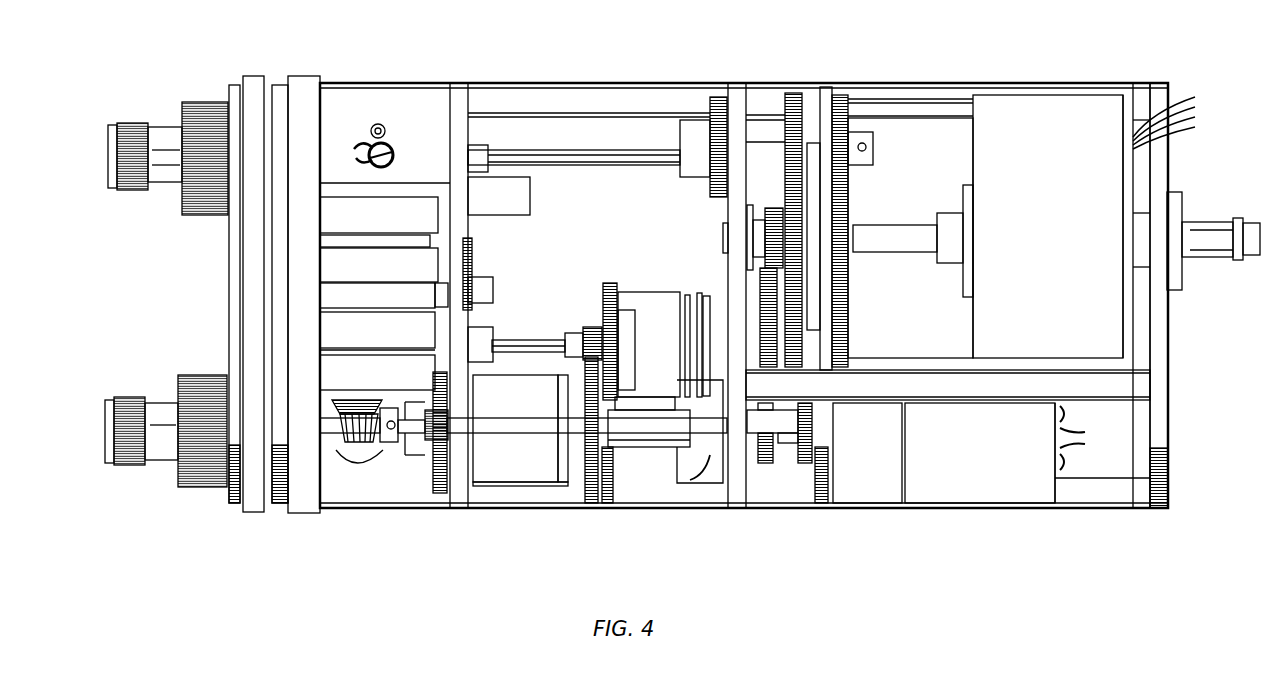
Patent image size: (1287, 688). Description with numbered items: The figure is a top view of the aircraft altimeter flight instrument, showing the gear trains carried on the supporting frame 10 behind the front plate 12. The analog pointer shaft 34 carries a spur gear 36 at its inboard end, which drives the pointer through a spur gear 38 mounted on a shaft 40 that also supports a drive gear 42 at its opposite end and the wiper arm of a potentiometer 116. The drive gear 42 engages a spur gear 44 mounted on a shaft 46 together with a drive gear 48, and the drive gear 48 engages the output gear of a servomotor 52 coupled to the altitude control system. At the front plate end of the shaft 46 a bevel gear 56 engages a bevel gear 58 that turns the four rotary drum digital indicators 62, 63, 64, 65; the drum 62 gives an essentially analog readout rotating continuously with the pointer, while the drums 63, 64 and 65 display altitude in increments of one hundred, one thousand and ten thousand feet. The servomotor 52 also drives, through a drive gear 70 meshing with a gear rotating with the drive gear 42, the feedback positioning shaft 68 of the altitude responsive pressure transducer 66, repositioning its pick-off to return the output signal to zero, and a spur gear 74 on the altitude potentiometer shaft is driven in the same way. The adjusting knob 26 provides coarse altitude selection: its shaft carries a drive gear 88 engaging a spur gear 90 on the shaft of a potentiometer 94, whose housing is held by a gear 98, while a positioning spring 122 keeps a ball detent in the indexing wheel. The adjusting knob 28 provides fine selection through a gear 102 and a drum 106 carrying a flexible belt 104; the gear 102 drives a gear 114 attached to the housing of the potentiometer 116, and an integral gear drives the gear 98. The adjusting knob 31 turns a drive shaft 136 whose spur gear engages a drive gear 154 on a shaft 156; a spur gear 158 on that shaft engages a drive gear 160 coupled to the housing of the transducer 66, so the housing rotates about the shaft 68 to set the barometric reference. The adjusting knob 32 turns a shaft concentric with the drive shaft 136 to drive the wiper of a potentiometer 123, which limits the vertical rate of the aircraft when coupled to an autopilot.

The supporting frame 10 is at (1188, 408).
The front plate 12 is at (253, 505).
The adjusting knob 26 is at (203, 388).
The adjusting knob 28 is at (130, 404).
The adjusting knob 31 is at (132, 138).
The adjusting knob 32 is at (205, 114).
The shaft 34 is at (493, 292).
The spur gear 36 is at (472, 252).
The spur gear 38 is at (493, 332).
The shaft 40 is at (530, 340).
The drive gear 42 is at (770, 292).
The spur gear 44 is at (758, 431).
The shaft 46 is at (513, 424).
The drive gear 48 is at (820, 450).
The servomotor 52 is at (968, 468).
The bevel gear 56 is at (388, 452).
The bevel gear 58 is at (335, 406).
The rotary drum digital indicator 62 is at (322, 374).
The rotary drum digital indicator 63 is at (322, 324).
The rotary drum digital indicator 64 is at (322, 271).
The rotary drum digital indicator 65 is at (322, 221).
The altitude responsive pressure transducer 66 is at (1070, 120).
The feedback positioning shaft 68 is at (906, 239).
The drive gear 70 is at (793, 100).
The spur gear 74 is at (803, 446).
The drive gear 88 is at (436, 490).
The spur gear 90 is at (592, 326).
The potentiometer 94 is at (513, 486).
The gear 98 is at (586, 490).
The gear 102 is at (608, 490).
The flexible belt 104 is at (711, 480).
The drum 106 is at (683, 478).
The gear 114 is at (611, 282).
The potentiometer 116 is at (660, 316).
The positioning spring 122 is at (345, 454).
The potentiometer 123 is at (513, 205).
The drive shaft 136 is at (607, 160).
The drive gear 154 is at (712, 191).
The shaft 156 is at (762, 143).
The spur gear 158 is at (875, 150).
The drive gear 160 is at (838, 100).